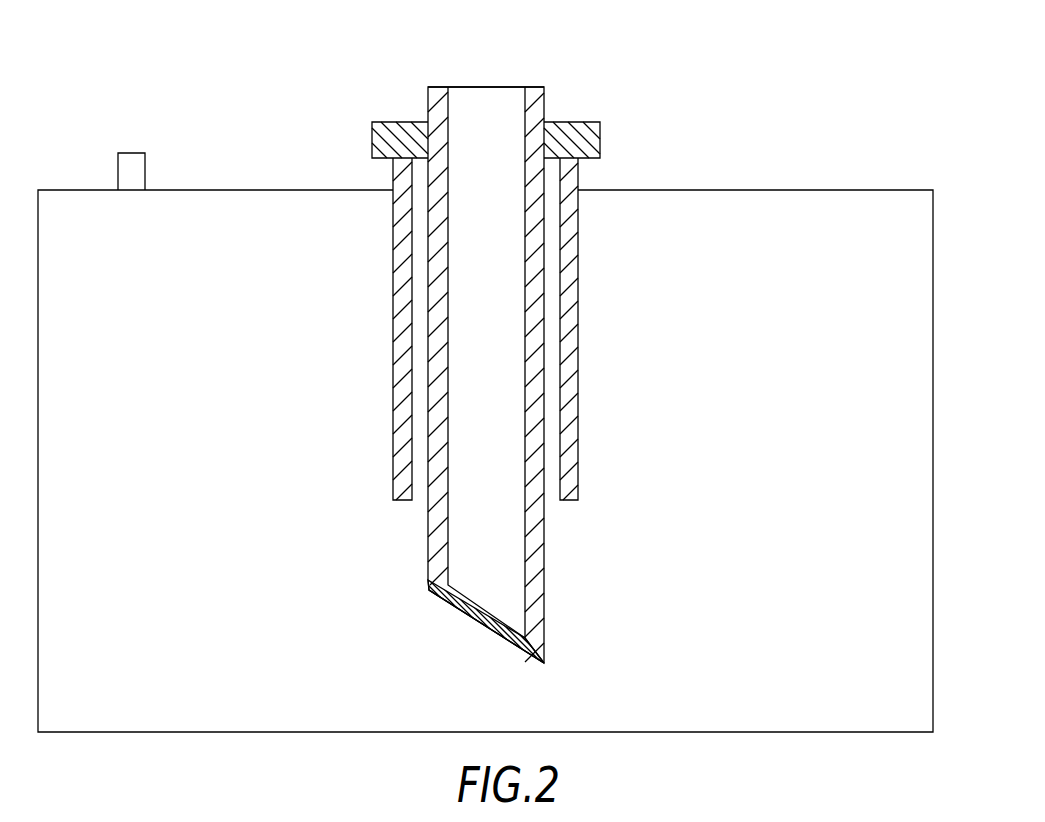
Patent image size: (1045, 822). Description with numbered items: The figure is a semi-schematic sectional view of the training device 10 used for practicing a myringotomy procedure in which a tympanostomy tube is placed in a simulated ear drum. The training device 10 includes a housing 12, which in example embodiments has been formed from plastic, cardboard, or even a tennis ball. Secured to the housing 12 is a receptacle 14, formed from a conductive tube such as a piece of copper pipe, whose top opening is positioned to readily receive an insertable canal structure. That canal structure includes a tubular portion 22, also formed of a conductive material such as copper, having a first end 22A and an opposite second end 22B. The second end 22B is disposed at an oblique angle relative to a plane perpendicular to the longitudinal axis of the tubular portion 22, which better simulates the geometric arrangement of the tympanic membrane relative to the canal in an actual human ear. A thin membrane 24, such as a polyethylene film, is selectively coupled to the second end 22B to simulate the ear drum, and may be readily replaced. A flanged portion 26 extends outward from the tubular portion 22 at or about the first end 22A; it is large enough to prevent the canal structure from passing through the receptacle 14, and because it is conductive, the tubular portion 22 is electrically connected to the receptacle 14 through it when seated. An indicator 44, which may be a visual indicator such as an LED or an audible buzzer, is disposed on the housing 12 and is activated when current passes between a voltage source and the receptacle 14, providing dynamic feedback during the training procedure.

The training device 10 is at (788, 95).
The housing 12 is at (737, 190).
The receptacle 14 is at (568, 357).
The tubular portion 22 is at (535, 290).
The first end 22A is at (455, 70).
The second end 22B is at (562, 672).
The thin membrane 24 is at (463, 613).
The flanged portion 26 is at (600, 135).
The indicator 44 is at (145, 168).